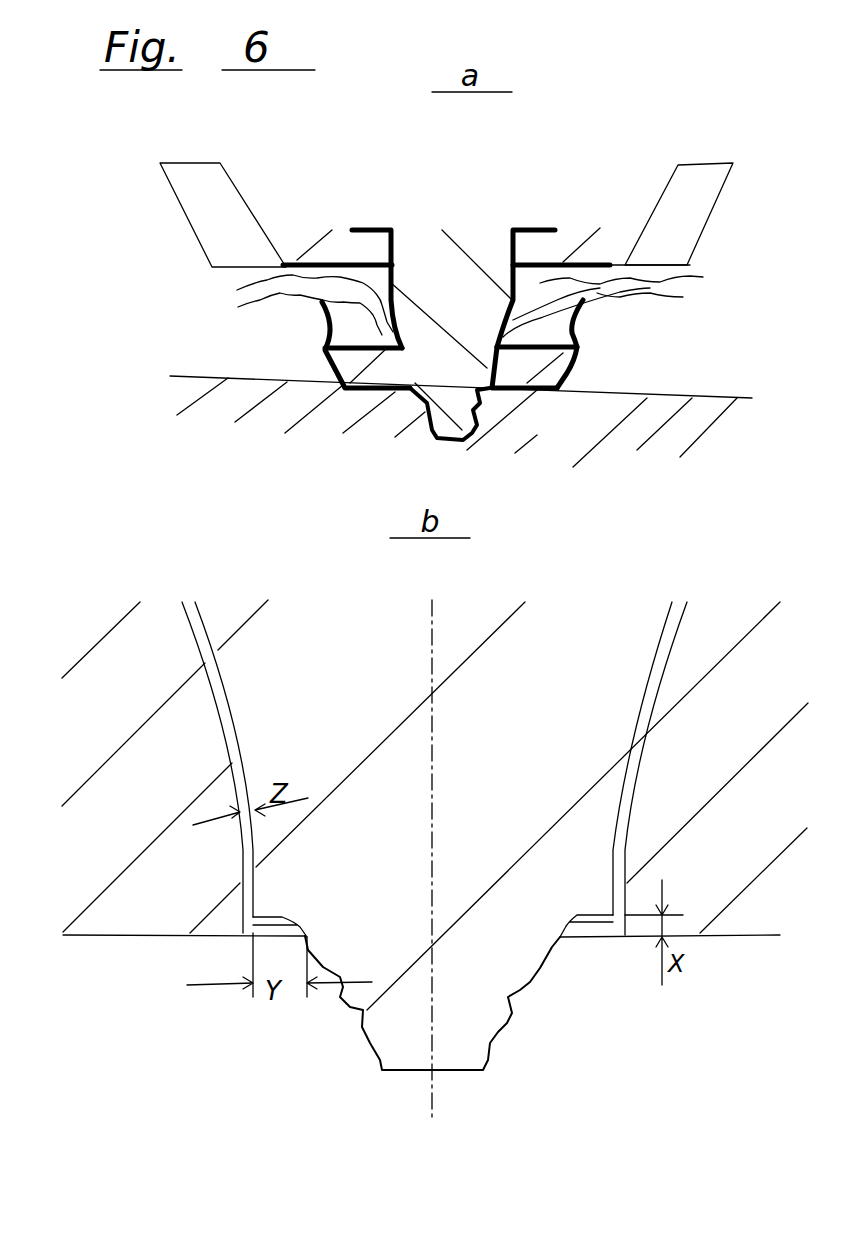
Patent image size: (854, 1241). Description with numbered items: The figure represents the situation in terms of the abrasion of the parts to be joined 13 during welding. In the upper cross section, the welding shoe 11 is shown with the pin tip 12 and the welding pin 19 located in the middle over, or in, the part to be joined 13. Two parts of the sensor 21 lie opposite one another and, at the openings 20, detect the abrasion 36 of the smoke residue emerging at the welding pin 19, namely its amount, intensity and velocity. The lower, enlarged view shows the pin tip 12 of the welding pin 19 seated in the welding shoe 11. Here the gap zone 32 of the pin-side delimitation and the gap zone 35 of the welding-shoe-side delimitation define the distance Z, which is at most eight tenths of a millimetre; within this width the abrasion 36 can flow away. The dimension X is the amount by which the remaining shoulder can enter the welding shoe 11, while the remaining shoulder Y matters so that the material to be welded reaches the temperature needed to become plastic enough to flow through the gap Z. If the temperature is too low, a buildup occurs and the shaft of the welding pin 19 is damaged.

In FIG. 6a, the welding shoe 11 is at (382, 362).
In FIG. 6b, the welding shoe 11 is at (148, 937).
In FIG. 6a, the pin tip 12 is at (460, 420).
In FIG. 6b, the pin tip 12 is at (488, 1000).
In FIG. 6a, the part to be joined 13 is at (660, 398).
In FIG. 6a, the welding pin 19 is at (502, 280).
In FIG. 6b, the welding pin 19 is at (547, 762).
In FIG. 6a, the openings 20 is at (577, 330).
In FIG. 6a, the sensor 21 is at (678, 193).
In FIG. 6b, the gap zone of the pin-side delimitation 32 is at (246, 733).
In FIG. 6b, the gap zone of the welding-shoe-side delimitation 35 is at (238, 735).
In FIG. 6a, the abrasion 36 is at (547, 308).